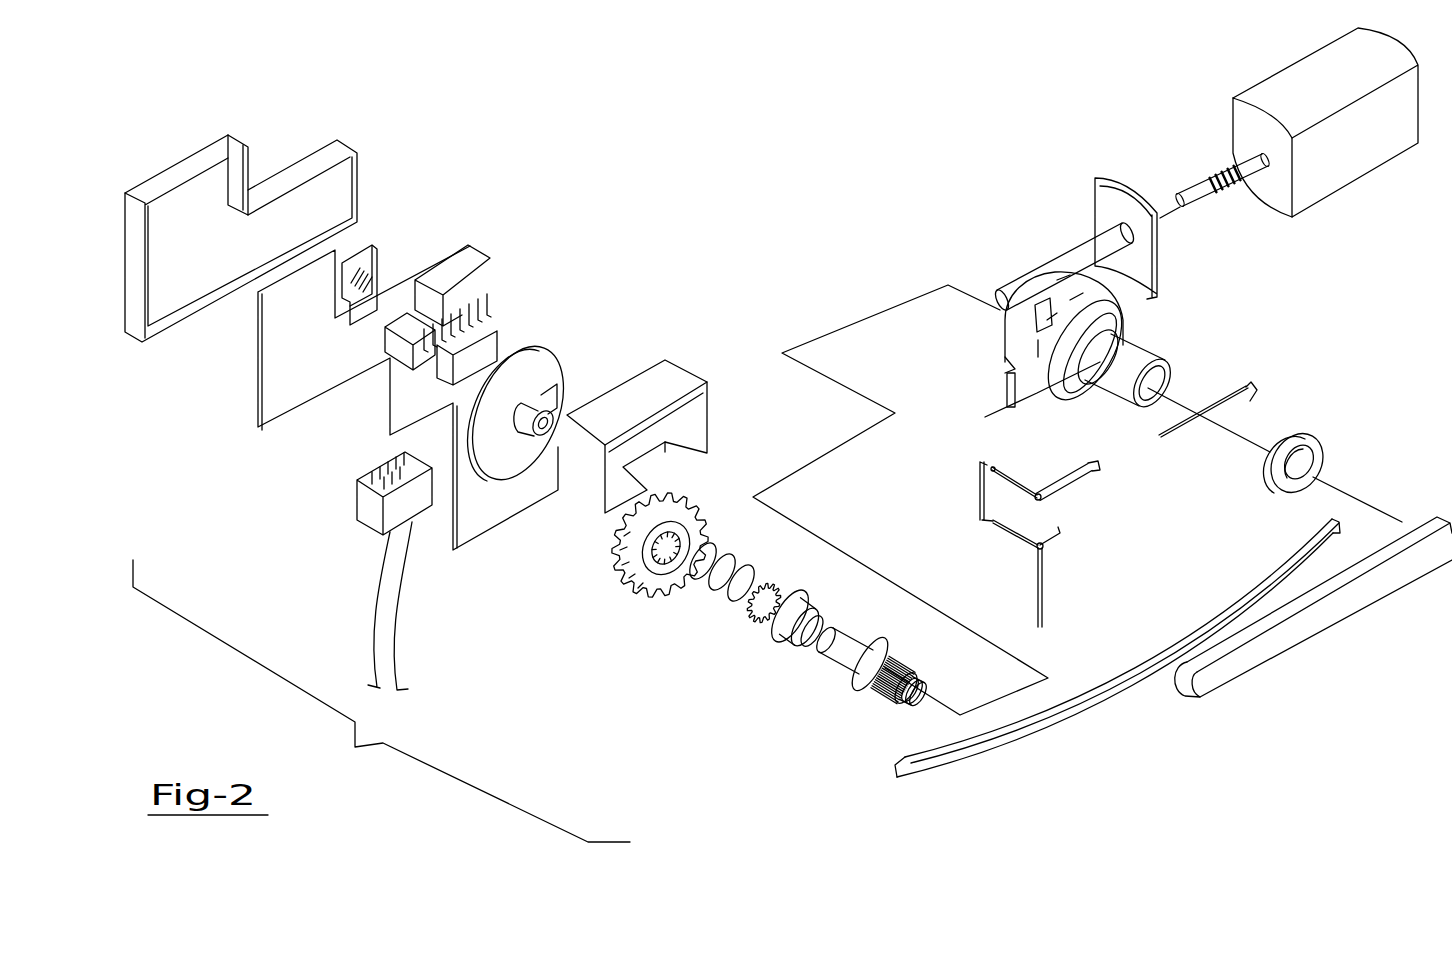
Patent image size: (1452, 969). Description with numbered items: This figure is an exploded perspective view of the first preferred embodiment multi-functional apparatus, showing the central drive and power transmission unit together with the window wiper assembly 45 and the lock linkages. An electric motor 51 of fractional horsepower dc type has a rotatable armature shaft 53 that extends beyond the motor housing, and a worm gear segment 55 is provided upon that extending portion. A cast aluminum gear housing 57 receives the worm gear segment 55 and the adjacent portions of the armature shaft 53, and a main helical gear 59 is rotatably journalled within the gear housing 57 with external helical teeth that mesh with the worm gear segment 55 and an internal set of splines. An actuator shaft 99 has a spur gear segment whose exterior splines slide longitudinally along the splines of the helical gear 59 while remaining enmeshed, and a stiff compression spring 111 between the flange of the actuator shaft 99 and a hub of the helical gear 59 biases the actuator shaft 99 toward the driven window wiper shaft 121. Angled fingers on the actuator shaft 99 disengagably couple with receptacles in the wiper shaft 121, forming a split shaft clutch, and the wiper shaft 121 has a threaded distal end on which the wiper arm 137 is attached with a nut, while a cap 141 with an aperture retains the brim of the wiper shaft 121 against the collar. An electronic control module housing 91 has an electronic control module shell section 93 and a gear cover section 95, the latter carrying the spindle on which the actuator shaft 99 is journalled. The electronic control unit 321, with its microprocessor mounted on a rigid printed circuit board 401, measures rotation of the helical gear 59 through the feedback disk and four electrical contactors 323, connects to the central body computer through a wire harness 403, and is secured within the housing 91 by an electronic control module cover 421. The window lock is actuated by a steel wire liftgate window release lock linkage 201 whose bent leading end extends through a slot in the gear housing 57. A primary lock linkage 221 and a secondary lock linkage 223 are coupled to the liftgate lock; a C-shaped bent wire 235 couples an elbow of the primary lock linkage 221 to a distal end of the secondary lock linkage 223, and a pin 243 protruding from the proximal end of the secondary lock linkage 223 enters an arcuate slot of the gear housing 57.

The electronic control module cover 421 is at (200, 162).
The rigid printed circuit board 401 is at (287, 368).
The electrical contactors 323 is at (375, 262).
The electronic control unit 321 is at (505, 252).
The gear cover section 95 is at (517, 383).
The electronic control module housing 91 is at (600, 376).
The electronic control module shell section 93 is at (656, 383).
The wire harness 403 is at (385, 638).
The main helical gear 59 is at (650, 596).
The compression spring 111 is at (718, 585).
The actuator shaft 99 is at (786, 636).
The window wiper shaft 121 is at (848, 650).
The gear housing 57 is at (1038, 286).
The worm gear segment 55 is at (1198, 181).
The armature shaft 53 is at (1247, 163).
The electric motor 51 is at (1325, 85).
The liftgate window release lock linkage 201 is at (1186, 423).
The cap 141 is at (1298, 439).
The C-shaped bent wire 235 is at (982, 500).
The secondary lock linkage 223 is at (1060, 488).
The pin 243 is at (1113, 424).
The primary lock linkage 221 is at (1044, 593).
The wiper arm 137 is at (1413, 562).
The window wiper assembly 45 is at (1224, 768).